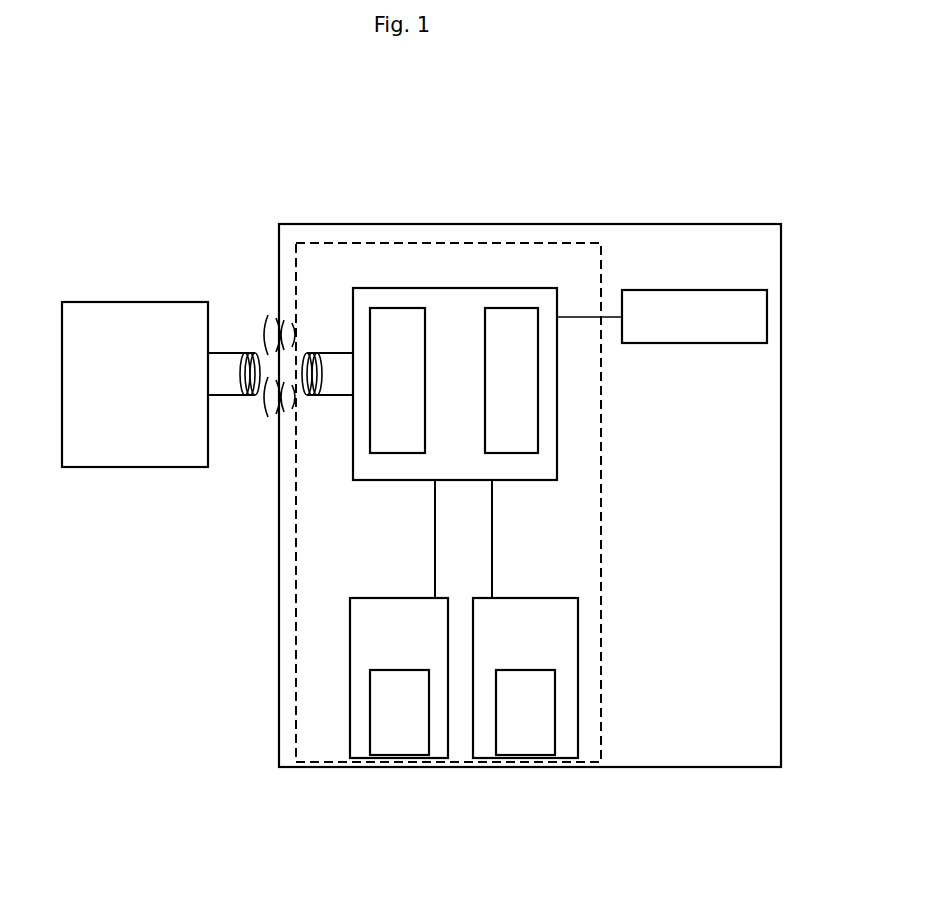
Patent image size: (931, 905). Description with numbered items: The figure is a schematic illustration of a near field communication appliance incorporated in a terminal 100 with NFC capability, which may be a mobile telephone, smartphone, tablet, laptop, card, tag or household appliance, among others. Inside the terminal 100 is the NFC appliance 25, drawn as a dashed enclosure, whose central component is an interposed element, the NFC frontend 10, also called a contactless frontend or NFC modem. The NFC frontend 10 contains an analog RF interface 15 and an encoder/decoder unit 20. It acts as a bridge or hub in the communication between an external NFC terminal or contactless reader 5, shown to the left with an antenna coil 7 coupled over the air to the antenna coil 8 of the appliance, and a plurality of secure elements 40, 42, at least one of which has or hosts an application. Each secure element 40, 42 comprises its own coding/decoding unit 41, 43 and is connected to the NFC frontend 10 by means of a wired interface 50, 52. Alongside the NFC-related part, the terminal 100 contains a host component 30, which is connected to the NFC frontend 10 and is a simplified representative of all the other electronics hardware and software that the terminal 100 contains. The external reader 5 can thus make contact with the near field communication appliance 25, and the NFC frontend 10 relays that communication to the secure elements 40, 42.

The terminal 100 is at (610, 223).
The NFC appliance 25 is at (601, 705).
The external NFC terminal/reader 5 is at (192, 298).
The antenna coil of external device 7 is at (237, 348).
The antenna coil of sensor module 8 is at (330, 397).
The NFC frontend 10 is at (447, 288).
The analog RF interface 15 is at (393, 308).
The encoder/decoder unit 20 is at (515, 308).
The host component 30 is at (710, 290).
The wired interface 52 is at (435, 525).
The wired interface 50 is at (492, 532).
The secure element 42 is at (382, 768).
The coding/decoding unit 43 is at (412, 756).
The secure element 40 is at (503, 768).
The coding/decoding unit 41 is at (540, 757).